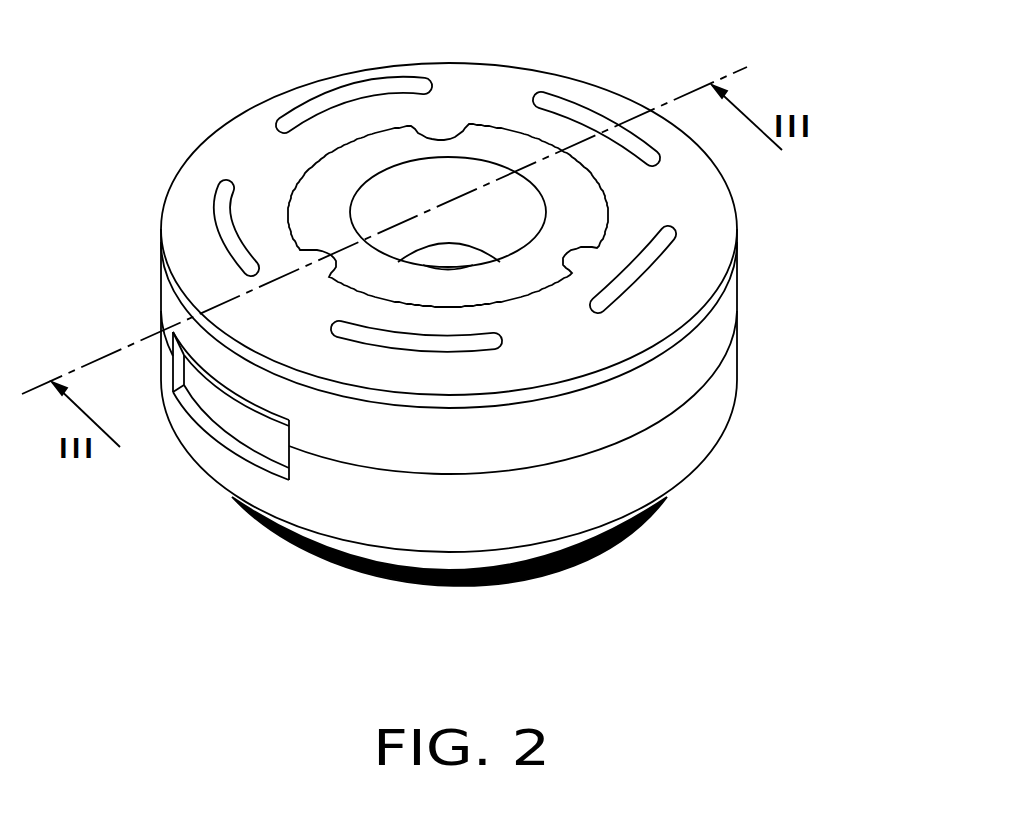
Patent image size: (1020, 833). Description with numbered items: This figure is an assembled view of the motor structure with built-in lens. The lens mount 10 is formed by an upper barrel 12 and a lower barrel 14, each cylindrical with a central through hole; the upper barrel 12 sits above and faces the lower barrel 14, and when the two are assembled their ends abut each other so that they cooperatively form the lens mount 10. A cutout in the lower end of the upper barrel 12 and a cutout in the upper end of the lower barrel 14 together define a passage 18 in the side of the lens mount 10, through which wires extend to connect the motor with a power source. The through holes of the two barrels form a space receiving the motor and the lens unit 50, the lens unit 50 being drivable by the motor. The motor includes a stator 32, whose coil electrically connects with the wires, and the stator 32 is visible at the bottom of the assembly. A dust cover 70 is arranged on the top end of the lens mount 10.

The lens mount 10 is at (535, 390).
The upper barrel 12 is at (717, 327).
The lower barrel 14 is at (503, 466).
The passage 18 is at (220, 418).
The stator 32 is at (577, 543).
The lens unit 50 is at (333, 195).
The dust cover 70 is at (490, 90).